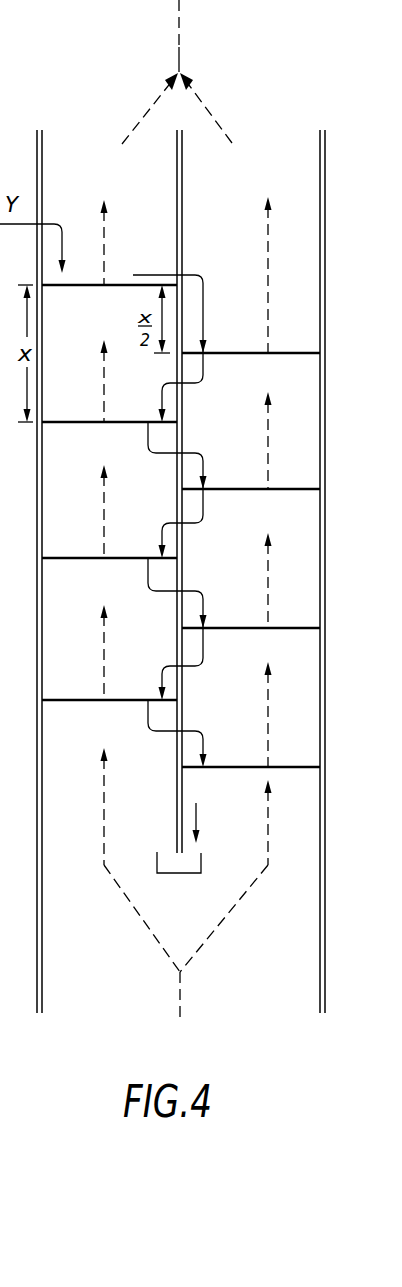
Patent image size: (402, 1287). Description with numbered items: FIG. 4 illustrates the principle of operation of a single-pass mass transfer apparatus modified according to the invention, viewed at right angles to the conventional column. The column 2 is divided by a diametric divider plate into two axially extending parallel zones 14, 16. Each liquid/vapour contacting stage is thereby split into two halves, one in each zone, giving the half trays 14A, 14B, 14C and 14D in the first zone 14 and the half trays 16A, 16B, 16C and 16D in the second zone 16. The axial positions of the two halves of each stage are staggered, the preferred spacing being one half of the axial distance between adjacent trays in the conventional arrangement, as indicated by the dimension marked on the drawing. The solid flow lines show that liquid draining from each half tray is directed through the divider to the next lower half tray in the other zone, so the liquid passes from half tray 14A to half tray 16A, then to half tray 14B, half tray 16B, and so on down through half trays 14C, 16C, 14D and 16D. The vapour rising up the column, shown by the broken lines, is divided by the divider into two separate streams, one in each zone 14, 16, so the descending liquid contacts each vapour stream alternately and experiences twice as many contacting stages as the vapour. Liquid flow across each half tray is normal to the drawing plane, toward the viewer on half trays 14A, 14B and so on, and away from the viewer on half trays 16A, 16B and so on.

The column 2 is at (327, 545).
The first axially extending zone 14 is at (118, 185).
The second axially extending zone 16 is at (280, 185).
The half tray 14A is at (124, 338).
The half tray 14B is at (124, 474).
The half tray 14C is at (124, 613).
The half tray 14D is at (124, 717).
The half tray 16A is at (251, 336).
The half tray 16B is at (251, 472).
The half tray 16C is at (251, 614).
The half tray 16D is at (251, 753).